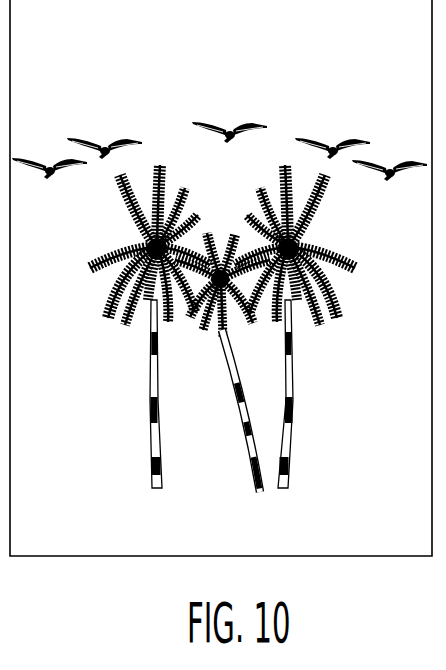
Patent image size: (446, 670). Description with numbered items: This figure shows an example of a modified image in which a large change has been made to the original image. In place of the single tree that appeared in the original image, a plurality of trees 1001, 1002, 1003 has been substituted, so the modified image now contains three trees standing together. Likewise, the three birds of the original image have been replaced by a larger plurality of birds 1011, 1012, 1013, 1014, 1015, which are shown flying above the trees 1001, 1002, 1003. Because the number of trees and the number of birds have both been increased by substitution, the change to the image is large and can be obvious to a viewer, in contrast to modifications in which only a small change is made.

The tree 1001 is at (152, 450).
The tree 1002 is at (253, 458).
The tree 1003 is at (292, 447).
The bird 1011 is at (40, 139).
The bird 1012 is at (117, 105).
The bird 1013 is at (234, 98).
The bird 1014 is at (334, 107).
The bird 1015 is at (390, 144).